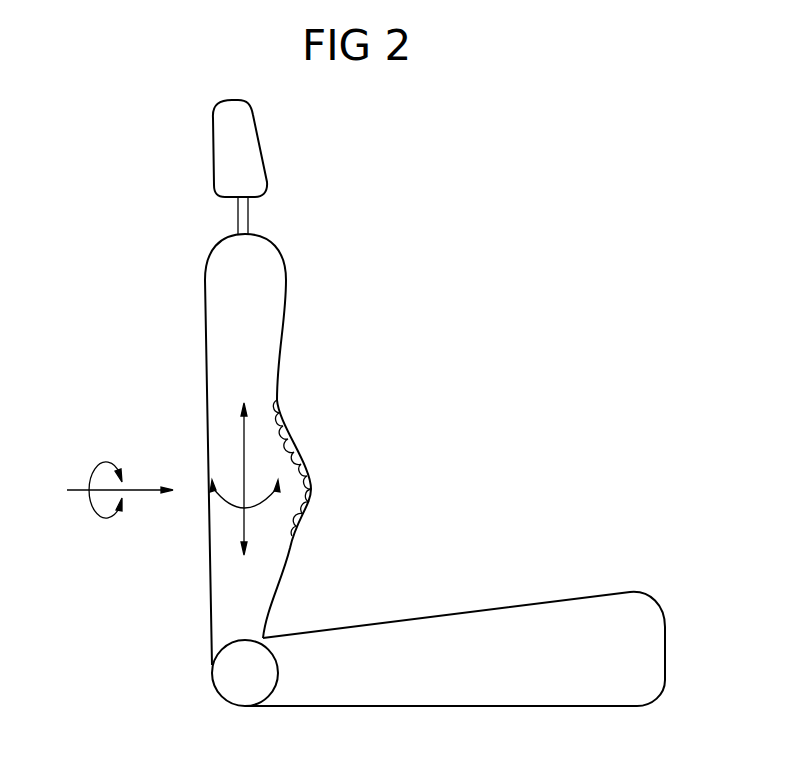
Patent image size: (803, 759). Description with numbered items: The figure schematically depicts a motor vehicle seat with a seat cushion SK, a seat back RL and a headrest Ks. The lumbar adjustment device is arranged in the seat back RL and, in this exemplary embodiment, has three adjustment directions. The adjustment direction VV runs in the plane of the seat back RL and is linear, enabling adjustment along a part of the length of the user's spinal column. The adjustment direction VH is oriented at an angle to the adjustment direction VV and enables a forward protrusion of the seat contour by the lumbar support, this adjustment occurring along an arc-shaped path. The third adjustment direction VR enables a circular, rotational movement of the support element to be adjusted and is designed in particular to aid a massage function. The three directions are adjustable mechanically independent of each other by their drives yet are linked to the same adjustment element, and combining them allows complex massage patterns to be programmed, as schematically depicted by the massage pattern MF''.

The headrest Ks is at (255, 170).
The seat back RL is at (230, 367).
The massage pattern MF'' is at (325, 519).
The seat cushion SK is at (533, 630).
The adjustment direction VV is at (244, 450).
The adjustment direction VH is at (262, 505).
The adjustment direction VR is at (100, 467).